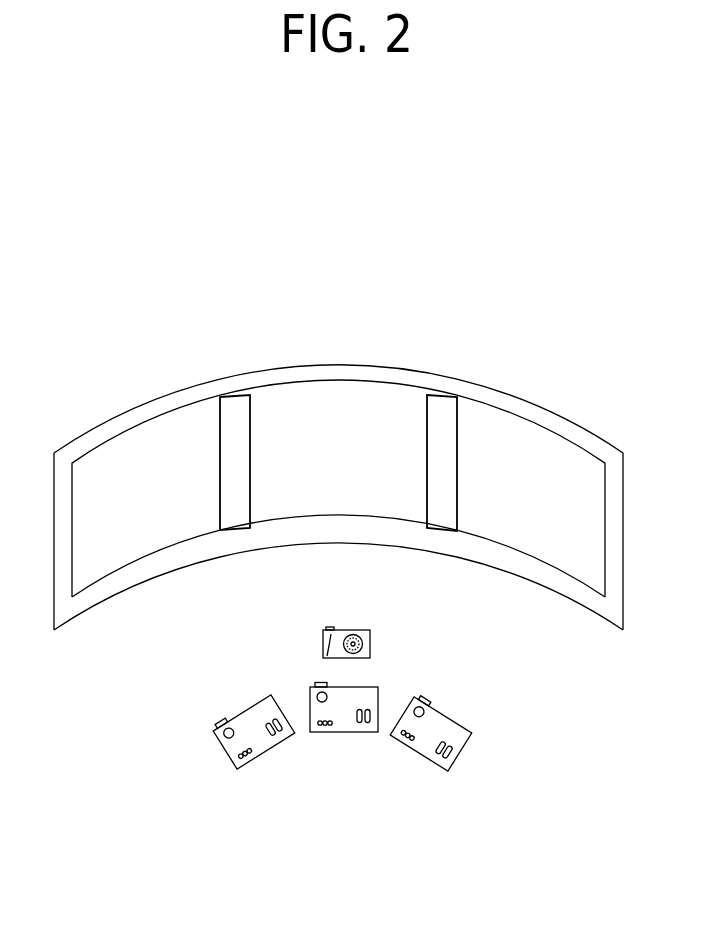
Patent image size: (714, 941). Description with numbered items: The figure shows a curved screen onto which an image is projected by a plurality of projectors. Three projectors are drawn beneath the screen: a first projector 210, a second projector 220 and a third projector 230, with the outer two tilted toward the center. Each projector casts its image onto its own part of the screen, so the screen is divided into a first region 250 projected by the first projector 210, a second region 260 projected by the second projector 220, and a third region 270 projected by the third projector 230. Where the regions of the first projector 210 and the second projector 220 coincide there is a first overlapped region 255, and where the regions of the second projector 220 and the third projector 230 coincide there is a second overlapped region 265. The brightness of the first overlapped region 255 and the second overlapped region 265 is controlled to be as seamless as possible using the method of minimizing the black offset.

The first projector 210 is at (230, 762).
The second projector 220 is at (345, 735).
The third projector 230 is at (455, 772).
The first region 250 is at (153, 440).
The first overlapped region 255 is at (233, 418).
The second region 260 is at (332, 410).
The second overlapped region 265 is at (445, 422).
The third region 270 is at (542, 447).